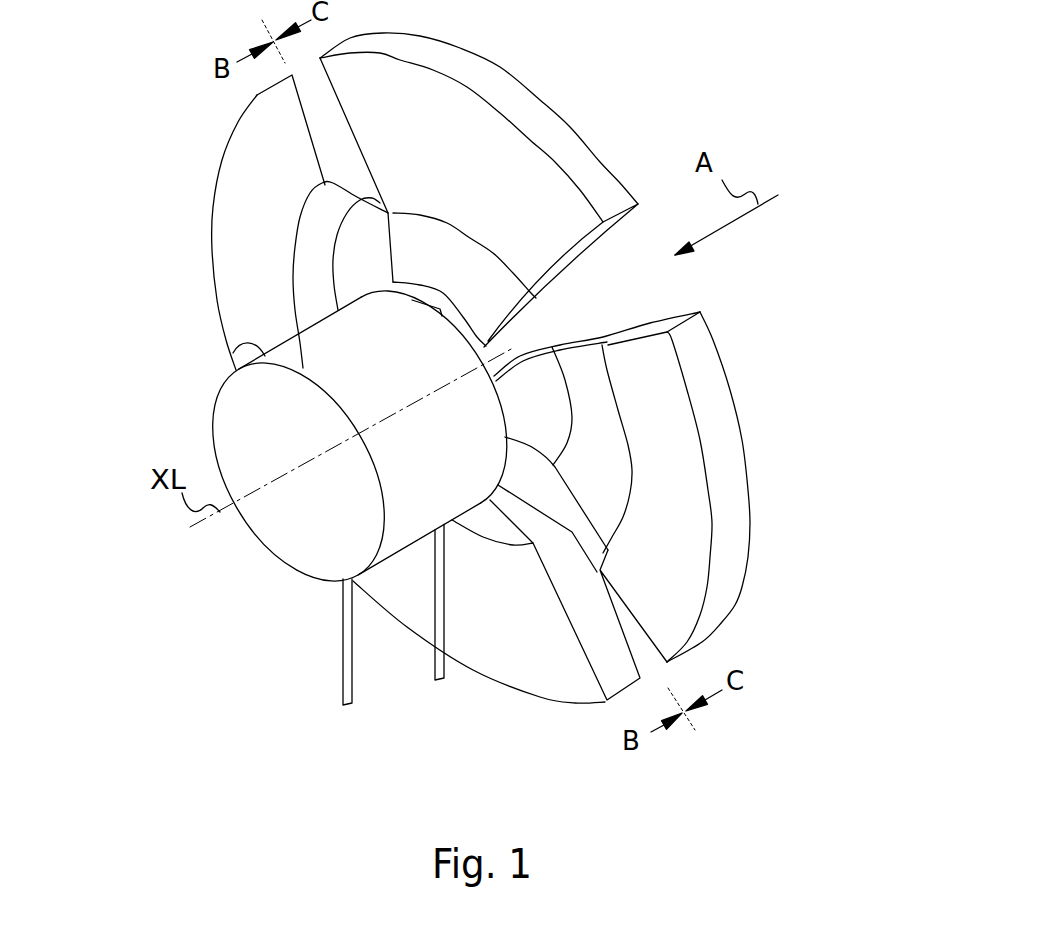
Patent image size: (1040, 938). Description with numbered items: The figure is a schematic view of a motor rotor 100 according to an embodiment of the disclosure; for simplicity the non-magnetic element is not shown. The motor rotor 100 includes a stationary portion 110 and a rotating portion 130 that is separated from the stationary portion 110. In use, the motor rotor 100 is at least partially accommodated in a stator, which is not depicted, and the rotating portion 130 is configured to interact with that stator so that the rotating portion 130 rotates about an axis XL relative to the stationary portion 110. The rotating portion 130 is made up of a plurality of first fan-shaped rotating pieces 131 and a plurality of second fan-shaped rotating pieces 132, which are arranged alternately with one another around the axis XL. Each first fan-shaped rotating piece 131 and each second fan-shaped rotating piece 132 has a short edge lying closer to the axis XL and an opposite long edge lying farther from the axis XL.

The motor rotor 100 is at (595, 360).
The stationary portion 110 is at (233, 353).
The rotating portion 130 is at (562, 368).
The first fan-shaped rotating piece 131 is at (683, 579).
The second fan-shaped rotating piece 132 is at (560, 657).